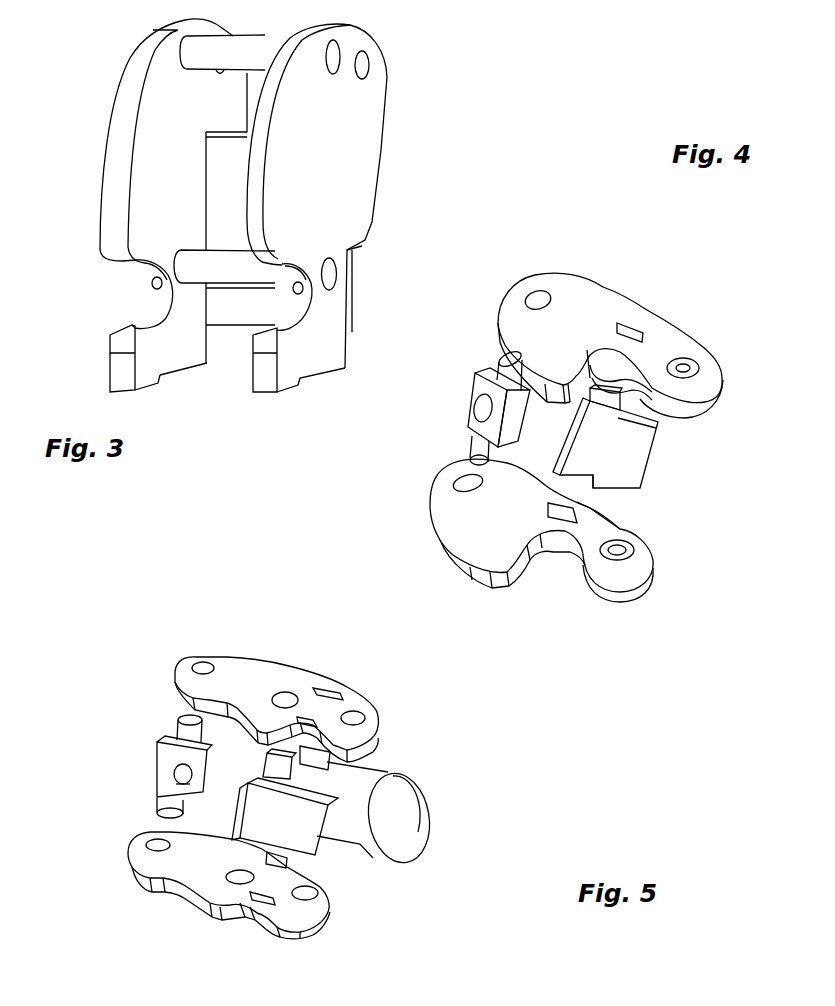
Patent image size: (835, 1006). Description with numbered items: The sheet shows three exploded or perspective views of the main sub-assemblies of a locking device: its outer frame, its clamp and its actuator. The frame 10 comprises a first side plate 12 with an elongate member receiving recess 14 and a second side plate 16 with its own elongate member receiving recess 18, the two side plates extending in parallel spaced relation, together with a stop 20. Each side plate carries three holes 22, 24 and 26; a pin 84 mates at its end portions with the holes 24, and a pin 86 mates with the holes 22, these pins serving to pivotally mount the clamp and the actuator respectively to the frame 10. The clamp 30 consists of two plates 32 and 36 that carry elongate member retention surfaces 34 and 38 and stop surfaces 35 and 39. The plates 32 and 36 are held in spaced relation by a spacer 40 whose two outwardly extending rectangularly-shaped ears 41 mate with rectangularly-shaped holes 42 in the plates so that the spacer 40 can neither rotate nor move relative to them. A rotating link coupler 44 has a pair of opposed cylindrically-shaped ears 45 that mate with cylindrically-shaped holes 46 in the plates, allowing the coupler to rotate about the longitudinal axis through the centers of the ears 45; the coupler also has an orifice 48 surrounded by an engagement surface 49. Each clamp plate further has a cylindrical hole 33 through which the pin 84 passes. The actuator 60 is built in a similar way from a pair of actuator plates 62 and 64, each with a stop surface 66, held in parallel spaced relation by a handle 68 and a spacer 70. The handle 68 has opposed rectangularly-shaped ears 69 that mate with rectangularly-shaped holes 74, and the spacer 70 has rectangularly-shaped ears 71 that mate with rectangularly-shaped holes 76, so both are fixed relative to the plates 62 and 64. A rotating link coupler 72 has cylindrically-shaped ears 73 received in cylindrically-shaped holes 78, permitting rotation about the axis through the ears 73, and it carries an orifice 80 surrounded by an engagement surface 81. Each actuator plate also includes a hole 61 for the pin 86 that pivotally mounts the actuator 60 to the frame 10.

In FIG. 3, the frame 10 is at (445, 52).
In FIG. 3, the first side plate 12 is at (328, 132).
In FIG. 3, the elongate member receiving recess 14 is at (310, 303).
In FIG. 3, the second side plate 16 is at (143, 63).
In FIG. 3, the elongate member receiving recess 18 is at (148, 297).
In FIG. 3, the stop 20 is at (243, 315).
In FIG. 3, the hole 22 is at (343, 53).
In FIG. 3, the hole 24 is at (332, 265).
In FIG. 3, the hole 26 is at (372, 67).
In FIG. 3, the pin 84 is at (223, 265).
In FIG. 3, the pin 86 is at (250, 52).
In FIG. 4, the clamp 30 is at (405, 479).
In FIG. 4, the plate 32 is at (563, 297).
In FIG. 4, the cylindrical hole 33 is at (682, 367).
In FIG. 4, the elongate member retention surface 34 is at (613, 365).
In FIG. 4, the stop surface 35 is at (623, 298).
In FIG. 4, the plate 36 is at (490, 517).
In FIG. 4, the elongate member retention surface 38 is at (540, 545).
In FIG. 4, the stop surface 39 is at (600, 497).
In FIG. 4, the spacer 40 is at (610, 455).
In FIG. 4, the ear 41 is at (600, 403).
In FIG. 4, the rectangularly-shaped hole 42 is at (627, 327).
In FIG. 4, the rotating link coupler 44 is at (467, 408).
In FIG. 4, the cylindrically-shaped ear 45 is at (495, 362).
In FIG. 4, the cylindrically-shaped hole 46 is at (530, 297).
In FIG. 4, the orifice 48 is at (480, 410).
In FIG. 4, the engagement surface 49 is at (482, 382).
In FIG. 5, the actuator 60 is at (88, 843).
In FIG. 5, the hole 61 is at (287, 697).
In FIG. 5, the actuator plate 62 is at (243, 670).
In FIG. 5, the actuator plate 64 is at (300, 922).
In FIG. 5, the stop surface 66 is at (190, 657).
In FIG. 5, the handle 68 is at (383, 832).
In FIG. 5, the rectangularly-shaped ear 69 is at (320, 763).
In FIG. 5, the spacer 70 is at (290, 830).
In FIG. 5, the rectangularly-shaped ear 71 is at (290, 790).
In FIG. 5, the rotating link coupler 72 is at (160, 760).
In FIG. 5, the cylindrically-shaped ear 73 is at (187, 735).
In FIG. 5, the rectangularly-shaped hole 74 is at (337, 692).
In FIG. 5, the rectangularly-shaped hole 76 is at (310, 720).
In FIG. 5, the cylindrically-shaped hole 78 is at (203, 668).
In FIG. 5, the orifice 80 is at (182, 774).
In FIG. 5, the engagement surface 81 is at (187, 787).